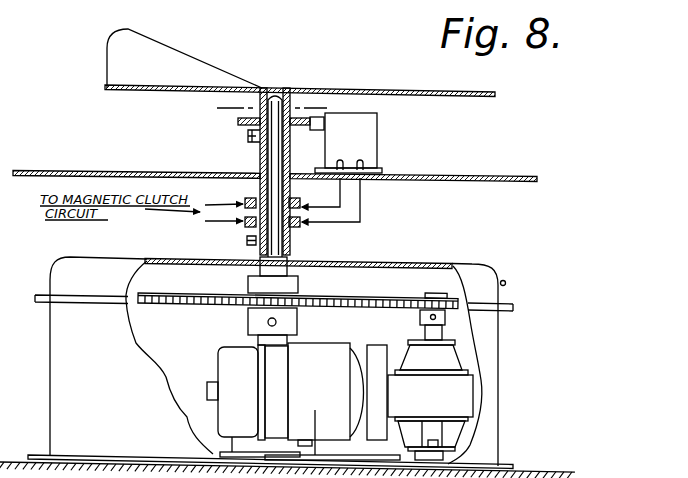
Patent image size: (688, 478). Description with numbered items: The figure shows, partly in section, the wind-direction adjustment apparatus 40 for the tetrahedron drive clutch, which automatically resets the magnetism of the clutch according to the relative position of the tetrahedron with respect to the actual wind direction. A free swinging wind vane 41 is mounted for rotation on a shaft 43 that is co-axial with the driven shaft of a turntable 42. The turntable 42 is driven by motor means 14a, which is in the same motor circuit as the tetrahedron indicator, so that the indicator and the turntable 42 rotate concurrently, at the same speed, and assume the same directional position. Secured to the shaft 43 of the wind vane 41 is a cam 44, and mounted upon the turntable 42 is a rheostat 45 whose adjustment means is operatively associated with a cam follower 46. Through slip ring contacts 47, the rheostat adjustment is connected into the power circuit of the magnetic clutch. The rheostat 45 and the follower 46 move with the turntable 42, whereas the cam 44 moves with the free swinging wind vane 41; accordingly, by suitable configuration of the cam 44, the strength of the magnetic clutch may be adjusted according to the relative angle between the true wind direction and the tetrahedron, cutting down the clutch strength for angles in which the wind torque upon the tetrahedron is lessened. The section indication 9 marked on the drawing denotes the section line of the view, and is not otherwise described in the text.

The wind vane 41 is at (162, 56).
The section line 9- 9 is at (229, 103).
The cam 44 is at (238, 121).
The shaft 43 is at (258, 141).
The cam follower 46 is at (318, 131).
The rheostat 45 is at (362, 142).
The turntable 42 is at (458, 175).
The slip ring contacts 47 is at (241, 225).
The apparatus 40 is at (527, 297).
The motor means 14a is at (215, 372).